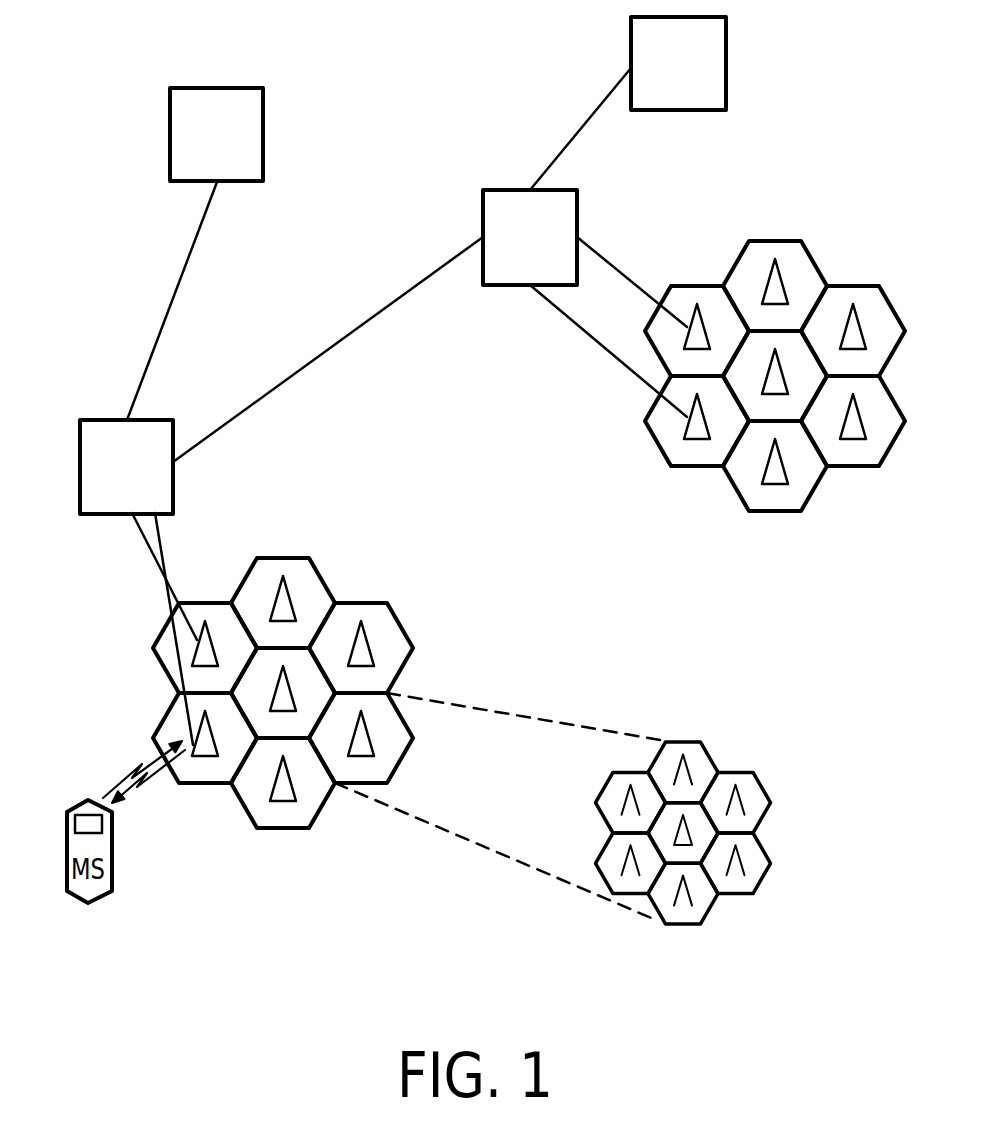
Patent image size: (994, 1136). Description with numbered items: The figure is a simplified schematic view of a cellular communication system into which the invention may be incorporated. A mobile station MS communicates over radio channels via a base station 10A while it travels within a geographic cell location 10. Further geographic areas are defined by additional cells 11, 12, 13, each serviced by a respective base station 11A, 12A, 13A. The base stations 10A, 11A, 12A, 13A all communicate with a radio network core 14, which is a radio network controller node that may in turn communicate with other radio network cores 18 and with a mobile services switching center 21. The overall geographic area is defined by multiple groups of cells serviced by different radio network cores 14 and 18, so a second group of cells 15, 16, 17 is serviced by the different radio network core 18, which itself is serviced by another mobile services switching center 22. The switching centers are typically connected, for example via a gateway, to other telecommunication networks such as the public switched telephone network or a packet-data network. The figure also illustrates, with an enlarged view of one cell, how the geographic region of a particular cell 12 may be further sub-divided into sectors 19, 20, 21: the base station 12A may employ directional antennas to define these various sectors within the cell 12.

The cell 10 is at (207, 784).
The base station 10A is at (197, 756).
The cell 11 is at (285, 829).
The base station 11A is at (296, 786).
The cell 12 is at (398, 762).
The base station 12A is at (372, 732).
The cell 13 is at (155, 668).
The base station 13A is at (213, 633).
The radio network core 14 is at (80, 465).
The cell 15 is at (657, 447).
The cell 16 is at (735, 490).
The cell 17 is at (850, 468).
The radio network core 18 is at (483, 212).
The sector 19 is at (712, 757).
The sector 20 is at (767, 790).
The mobile services switching center 21 is at (170, 131).
The mobile services switching center 22 is at (631, 38).